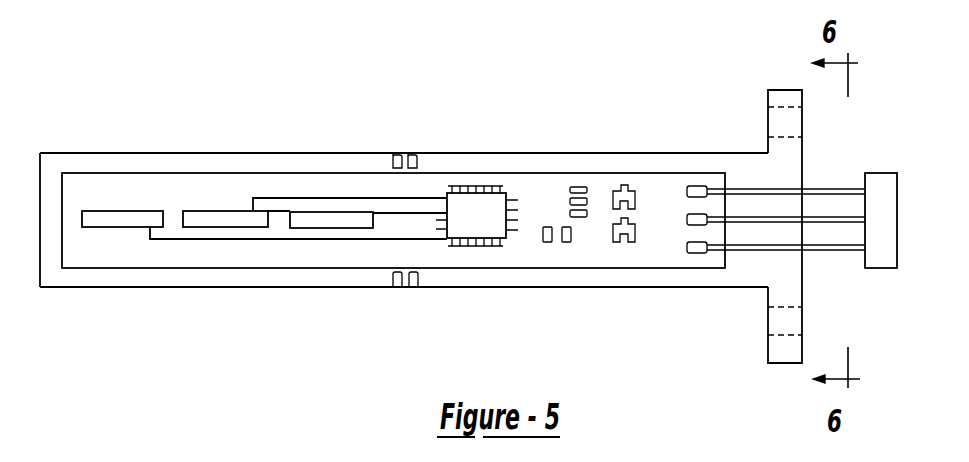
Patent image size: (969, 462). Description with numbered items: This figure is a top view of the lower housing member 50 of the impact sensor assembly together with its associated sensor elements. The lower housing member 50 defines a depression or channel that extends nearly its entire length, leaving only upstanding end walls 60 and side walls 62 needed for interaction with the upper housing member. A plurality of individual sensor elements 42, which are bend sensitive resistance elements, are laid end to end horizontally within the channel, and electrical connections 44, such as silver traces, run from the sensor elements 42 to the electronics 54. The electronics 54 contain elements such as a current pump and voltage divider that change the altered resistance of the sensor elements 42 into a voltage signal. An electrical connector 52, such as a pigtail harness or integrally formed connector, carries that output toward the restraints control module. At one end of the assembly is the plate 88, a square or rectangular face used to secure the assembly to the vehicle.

The impact sensor element 42 is at (318, 212).
The electrical connections 44 is at (430, 239).
The lower housing member 50 is at (302, 277).
The electrical connector 52 is at (884, 187).
The electronics 54 is at (537, 193).
The end walls 60 is at (42, 240).
The side walls 62 is at (200, 285).
The plate 88 is at (768, 122).